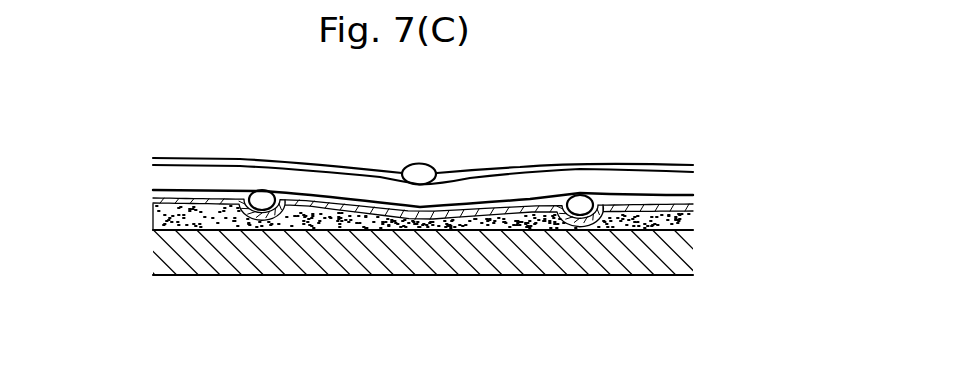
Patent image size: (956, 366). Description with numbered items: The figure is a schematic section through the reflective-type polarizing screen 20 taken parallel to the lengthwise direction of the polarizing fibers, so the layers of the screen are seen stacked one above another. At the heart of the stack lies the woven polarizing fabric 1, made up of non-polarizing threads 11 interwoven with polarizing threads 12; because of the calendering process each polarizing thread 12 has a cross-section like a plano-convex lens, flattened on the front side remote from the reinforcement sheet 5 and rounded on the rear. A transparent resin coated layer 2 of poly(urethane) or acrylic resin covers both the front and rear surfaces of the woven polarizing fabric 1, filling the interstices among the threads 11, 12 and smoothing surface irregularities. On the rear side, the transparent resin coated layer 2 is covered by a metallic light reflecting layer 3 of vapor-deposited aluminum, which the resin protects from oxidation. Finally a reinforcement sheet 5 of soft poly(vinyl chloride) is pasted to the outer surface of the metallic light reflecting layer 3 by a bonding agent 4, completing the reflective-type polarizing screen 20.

The woven polarizing fabric 1 is at (522, 94).
The non-polarizing thread 11 is at (440, 168).
The polarizing thread 12 is at (487, 188).
The transparent resin coated layer 2 is at (298, 192).
The reflective-type polarizing screen 20 is at (591, 149).
The metallic light reflecting layer 3 is at (337, 215).
The bonding agent 4 is at (472, 228).
The reinforcement sheet 5 is at (541, 268).